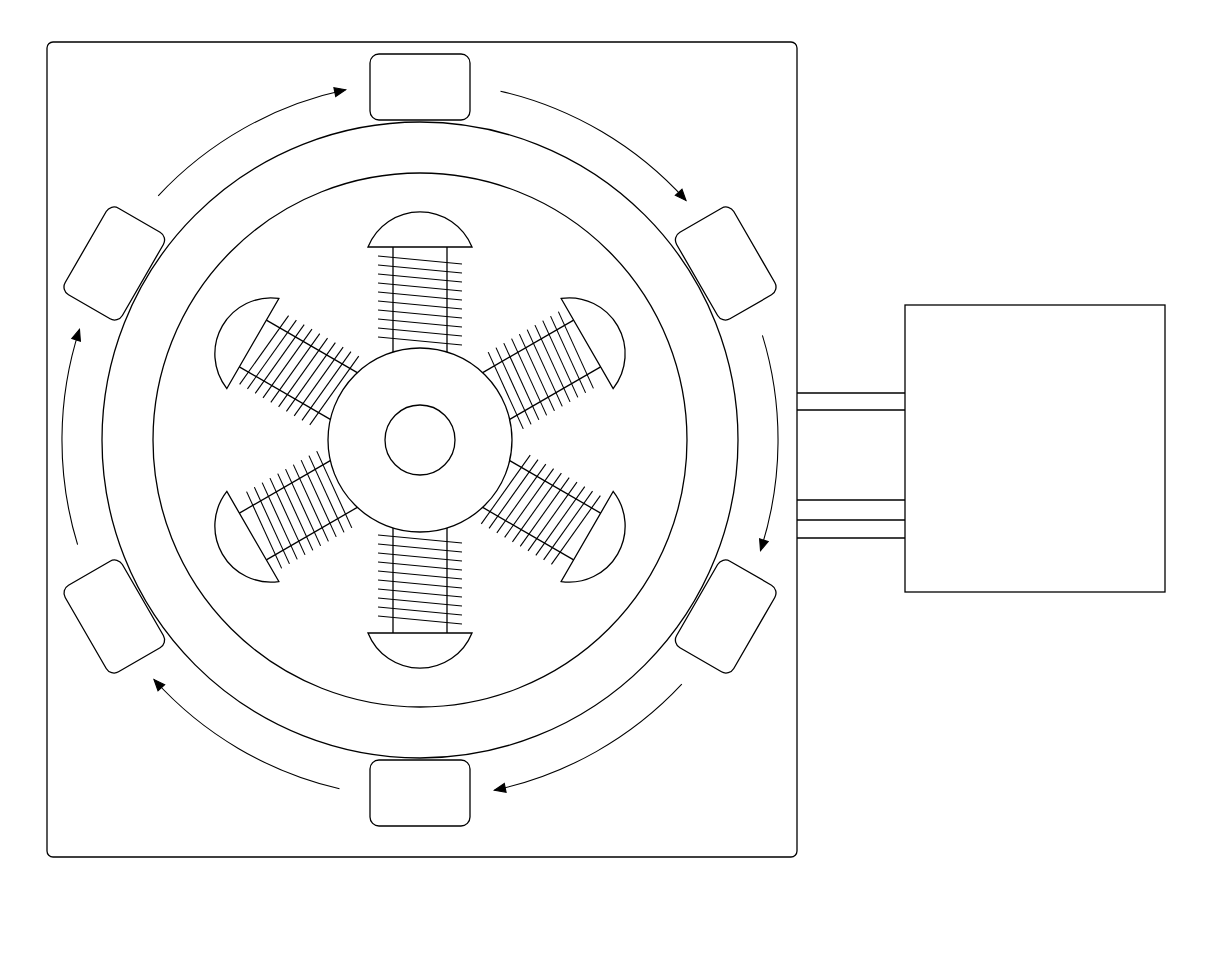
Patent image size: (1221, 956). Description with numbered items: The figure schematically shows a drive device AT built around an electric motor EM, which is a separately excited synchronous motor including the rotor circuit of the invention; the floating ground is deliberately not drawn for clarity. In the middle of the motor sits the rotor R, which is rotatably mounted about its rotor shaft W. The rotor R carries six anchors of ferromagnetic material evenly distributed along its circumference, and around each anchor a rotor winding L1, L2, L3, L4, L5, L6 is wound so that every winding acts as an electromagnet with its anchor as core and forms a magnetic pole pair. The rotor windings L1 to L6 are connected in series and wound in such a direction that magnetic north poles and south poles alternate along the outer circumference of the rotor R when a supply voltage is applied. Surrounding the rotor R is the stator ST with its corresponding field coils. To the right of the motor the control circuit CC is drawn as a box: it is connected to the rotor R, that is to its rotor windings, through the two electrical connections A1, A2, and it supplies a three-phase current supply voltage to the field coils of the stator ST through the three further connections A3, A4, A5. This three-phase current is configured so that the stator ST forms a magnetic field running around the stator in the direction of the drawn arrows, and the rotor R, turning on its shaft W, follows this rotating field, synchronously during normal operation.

The drive device AT is at (1062, 112).
The electric motor EM is at (797, 668).
The stator ST is at (729, 365).
The rotor R is at (539, 414).
The rotor shaft W is at (412, 449).
The rotor winding L1 is at (264, 385).
The rotor winding L2 is at (386, 276).
The rotor winding L3 is at (552, 322).
The rotor winding L4 is at (575, 475).
The rotor winding L5 is at (470, 602).
The rotor winding L6 is at (300, 574).
The control circuit CC is at (1020, 456).
The electrical connection of the rotor A1 is at (845, 393).
The electrical connection of the rotor A2 is at (845, 410).
The electrical connection of the stator A3 is at (845, 500).
The electrical connection of the stator A4 is at (845, 520).
The electrical connection of the stator A5 is at (878, 538).